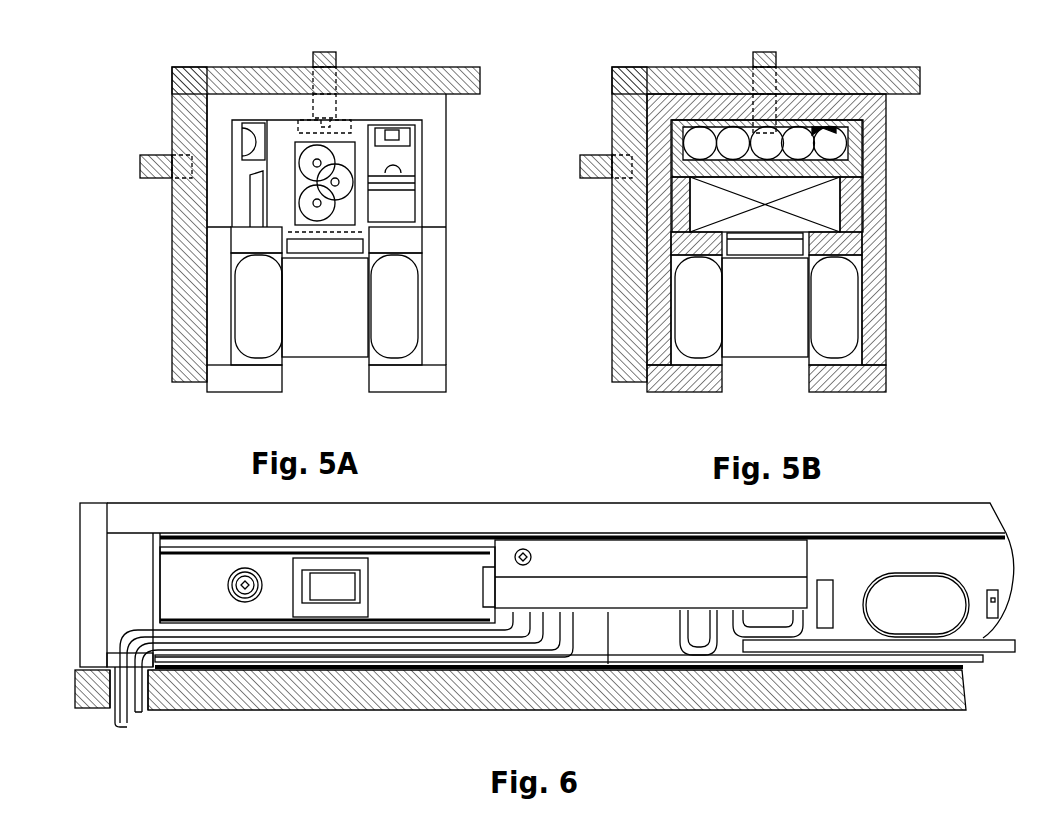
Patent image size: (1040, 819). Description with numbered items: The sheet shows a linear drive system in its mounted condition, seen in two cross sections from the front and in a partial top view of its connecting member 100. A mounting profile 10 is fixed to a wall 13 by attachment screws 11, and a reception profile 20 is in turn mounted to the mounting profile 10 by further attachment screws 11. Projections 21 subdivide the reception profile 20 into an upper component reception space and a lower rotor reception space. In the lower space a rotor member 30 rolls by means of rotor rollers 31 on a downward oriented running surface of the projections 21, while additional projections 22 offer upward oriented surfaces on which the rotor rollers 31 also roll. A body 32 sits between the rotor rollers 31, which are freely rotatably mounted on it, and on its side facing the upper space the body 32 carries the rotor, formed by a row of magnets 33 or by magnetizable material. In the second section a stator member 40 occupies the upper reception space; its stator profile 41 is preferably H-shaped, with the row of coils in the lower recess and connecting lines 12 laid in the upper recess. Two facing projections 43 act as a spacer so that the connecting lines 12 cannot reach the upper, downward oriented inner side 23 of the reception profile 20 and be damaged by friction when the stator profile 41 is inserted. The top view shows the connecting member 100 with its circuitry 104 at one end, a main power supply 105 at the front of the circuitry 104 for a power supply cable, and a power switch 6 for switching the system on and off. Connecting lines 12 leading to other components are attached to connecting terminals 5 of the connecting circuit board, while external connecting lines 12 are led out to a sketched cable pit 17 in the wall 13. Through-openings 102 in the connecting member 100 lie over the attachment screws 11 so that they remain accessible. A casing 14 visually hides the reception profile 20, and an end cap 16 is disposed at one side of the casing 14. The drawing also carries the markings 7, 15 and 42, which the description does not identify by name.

In FIG. 6, the connecting terminals 5 is at (648, 600).
In FIG. 6, the power switch 6 is at (330, 595).
In FIG. 6, the connector 7 is at (245, 603).
In FIG. 5A, the mounting profile 10 is at (405, 67).
In FIG. 5B, the mounting profile 10 is at (845, 67).
In FIG. 5A, the attachment screws 11 is at (324, 52).
In FIG. 5B, the attachment screws 11 is at (764, 52).
In FIG. 5B, the connecting lines 12 is at (767, 140).
In FIG. 6, the connecting lines 12 is at (132, 716).
In FIG. 6, the wall 13 is at (370, 708).
In FIG. 6, the casing 14 is at (153, 520).
In FIG. 6, the bracket 15 is at (114, 660).
In FIG. 6, the end cap 16 is at (90, 520).
In FIG. 6, the cable pit 17 is at (160, 706).
In FIG. 5A, the reception profile 20 is at (446, 120).
In FIG. 5B, the reception profile 20 is at (886, 120).
In FIG. 6, the reception profile 20 is at (963, 669).
In FIG. 5A, the projections 21 is at (250, 247).
In FIG. 5B, the projections 21 is at (690, 247).
In FIG. 5A, the projections 22 is at (250, 385).
In FIG. 5B, the projections 22 is at (690, 385).
In FIG. 5B, the inner side 23 is at (800, 140).
In FIG. 5A, the rotor members 30 is at (133, 228).
In FIG. 5B, the rotor members 30 is at (581, 232).
In FIG. 5A, the rotor rollers 31 is at (250, 330).
In FIG. 5B, the rotor rollers 31 is at (690, 330).
In FIG. 5A, the body 32 is at (355, 280).
In FIG. 5B, the body 32 is at (795, 280).
In FIG. 5A, the row of magnets 33 is at (300, 253).
In FIG. 5B, the row of magnets 33 is at (740, 253).
In FIG. 5A, the stator member 40 is at (240, 223).
In FIG. 5B, the stator member 40 is at (678, 223).
In FIG. 5B, the stator profile 41 is at (855, 181).
In FIG. 5B, the bearing block 42 is at (830, 203).
In FIG. 5B, the projections 43 is at (678, 129).
In FIG. 5A, the connecting member 100 is at (243, 133).
In FIG. 6, the through-openings 102 is at (920, 615).
In FIG. 6, the circuitry 104 is at (440, 605).
In FIG. 5A, the main power supply 105 is at (313, 153).